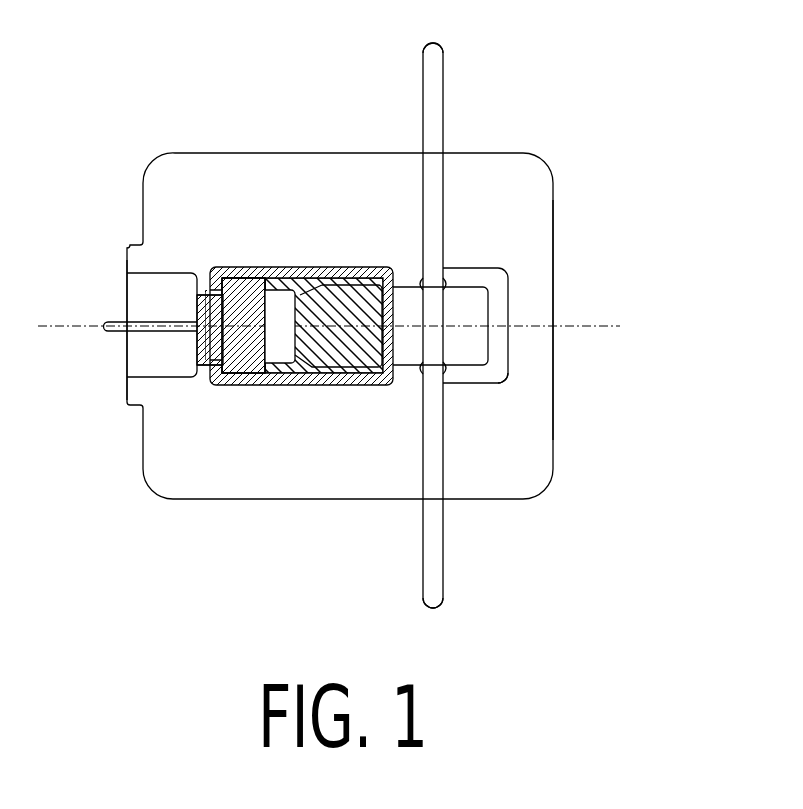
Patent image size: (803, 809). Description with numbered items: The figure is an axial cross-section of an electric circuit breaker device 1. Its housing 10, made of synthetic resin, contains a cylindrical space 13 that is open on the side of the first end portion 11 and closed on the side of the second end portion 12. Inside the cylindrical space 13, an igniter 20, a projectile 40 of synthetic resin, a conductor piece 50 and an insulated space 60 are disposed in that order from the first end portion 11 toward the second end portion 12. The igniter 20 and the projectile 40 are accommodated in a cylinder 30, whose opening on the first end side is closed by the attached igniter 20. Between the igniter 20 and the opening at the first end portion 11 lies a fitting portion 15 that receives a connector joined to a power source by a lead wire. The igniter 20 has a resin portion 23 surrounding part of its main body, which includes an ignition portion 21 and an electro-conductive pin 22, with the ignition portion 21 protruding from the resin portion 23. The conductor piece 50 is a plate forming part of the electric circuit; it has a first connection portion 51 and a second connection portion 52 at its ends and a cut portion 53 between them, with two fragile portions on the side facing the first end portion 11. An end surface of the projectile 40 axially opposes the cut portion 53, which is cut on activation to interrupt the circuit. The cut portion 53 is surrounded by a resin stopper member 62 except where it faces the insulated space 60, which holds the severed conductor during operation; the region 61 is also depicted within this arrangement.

The electric circuit breaker device 1 is at (272, 126).
The housing 10 is at (193, 153).
The first end portion 11 is at (125, 263).
The second end portion 12 is at (554, 236).
The cylindrical space 13 is at (414, 350).
The fitting portion 15 is at (148, 277).
The igniter 20 is at (242, 578).
The ignition portion 21 is at (285, 347).
The electro-conductive pin 22 is at (178, 332).
The resin portion 23 is at (238, 357).
The cylinder 30 is at (278, 266).
The projectile 40 is at (328, 292).
The conductor piece 50 is at (446, 119).
The first connection portion 51 is at (443, 75).
The second connection portion 52 is at (445, 565).
The cut portion 53 is at (435, 312).
The insulated space 60 is at (468, 308).
The frame opening 61 is at (473, 352).
The stopper member 62 is at (497, 373).